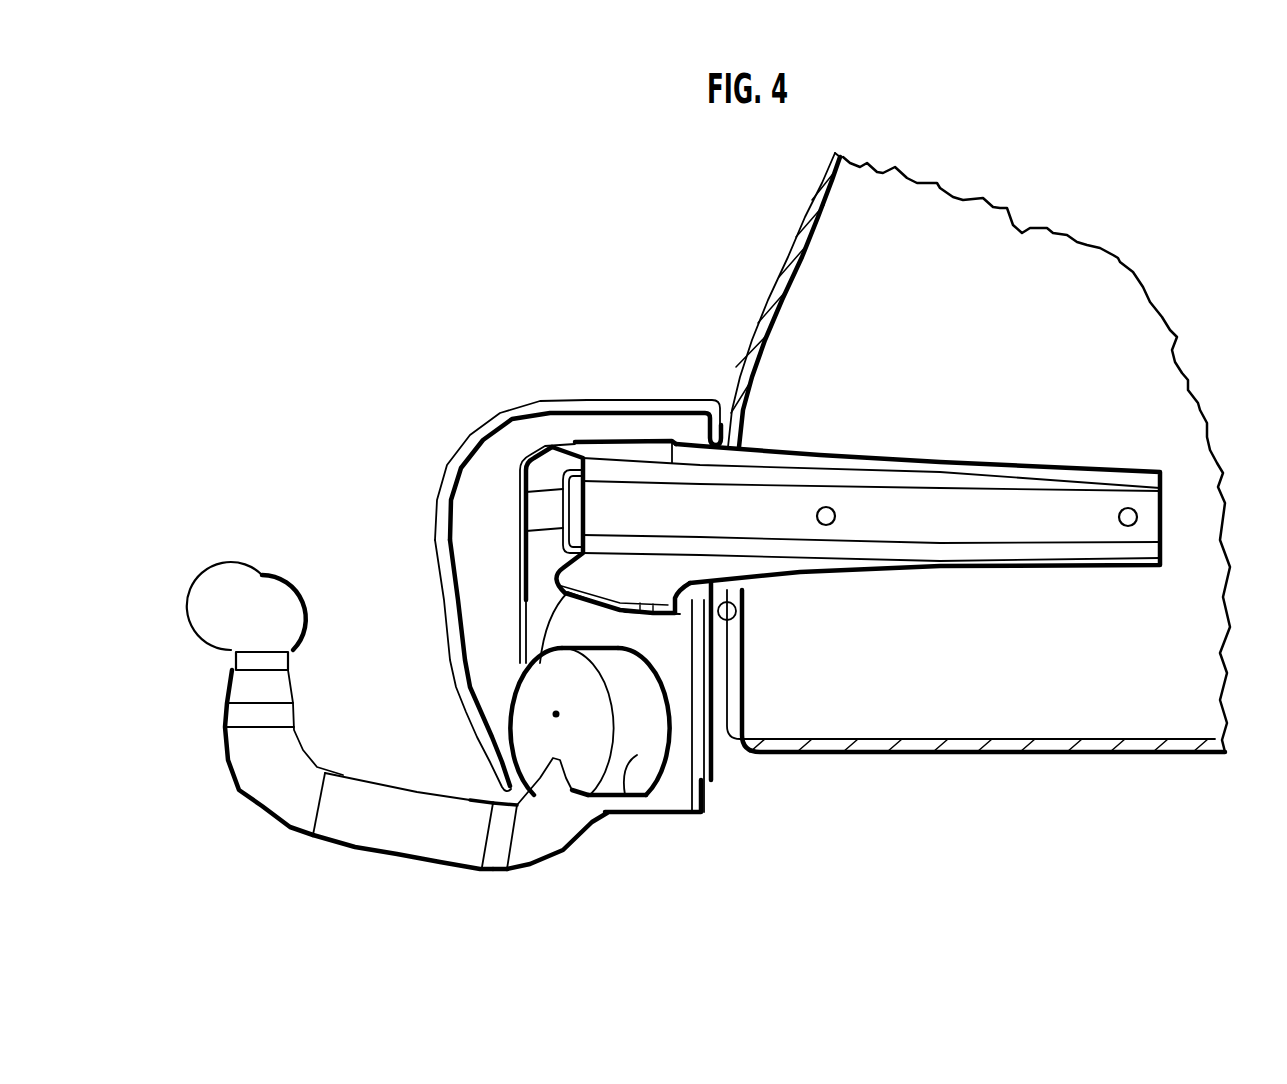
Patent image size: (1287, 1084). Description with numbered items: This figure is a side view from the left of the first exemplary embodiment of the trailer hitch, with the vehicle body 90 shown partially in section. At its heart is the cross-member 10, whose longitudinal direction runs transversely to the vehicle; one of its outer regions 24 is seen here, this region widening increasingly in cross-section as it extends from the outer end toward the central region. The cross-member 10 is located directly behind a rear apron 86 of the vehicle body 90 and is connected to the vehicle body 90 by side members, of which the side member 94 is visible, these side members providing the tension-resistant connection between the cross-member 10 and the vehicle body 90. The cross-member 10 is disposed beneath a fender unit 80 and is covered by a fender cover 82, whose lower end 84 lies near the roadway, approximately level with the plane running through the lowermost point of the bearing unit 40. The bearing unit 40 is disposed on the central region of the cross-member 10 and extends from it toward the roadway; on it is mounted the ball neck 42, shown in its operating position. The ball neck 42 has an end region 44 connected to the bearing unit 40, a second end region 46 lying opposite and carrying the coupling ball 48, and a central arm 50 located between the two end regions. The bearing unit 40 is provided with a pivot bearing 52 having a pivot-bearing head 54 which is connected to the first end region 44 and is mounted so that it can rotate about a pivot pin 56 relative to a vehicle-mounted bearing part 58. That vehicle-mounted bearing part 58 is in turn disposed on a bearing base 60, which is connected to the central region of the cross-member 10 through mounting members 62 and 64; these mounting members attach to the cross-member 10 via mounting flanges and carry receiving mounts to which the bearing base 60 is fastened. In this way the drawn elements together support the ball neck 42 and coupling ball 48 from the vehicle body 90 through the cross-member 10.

The cross-member 10 is at (636, 440).
The outer region 24 is at (556, 470).
The bearing unit 40 is at (674, 789).
The ball neck 42 is at (306, 860).
The end region 44 is at (567, 823).
The second end region 46 is at (263, 770).
The coupling ball 48 is at (252, 607).
The central arm 50 is at (377, 817).
The pivot bearing 52 is at (683, 758).
The pivot-bearing head 54 is at (627, 800).
The pivot pin 56 is at (556, 714).
The vehicle-mounted bearing part 58 is at (668, 700).
The bearing base 60 is at (667, 638).
The mounting member 62 is at (704, 664).
The mounting member 64 is at (500, 535).
The fender unit 80 is at (475, 418).
The fender cover 82 is at (446, 637).
The lower end 84 is at (502, 838).
The rear apron 86 is at (736, 609).
The vehicle body 90 is at (1051, 336).
The side member 94 is at (1022, 503).